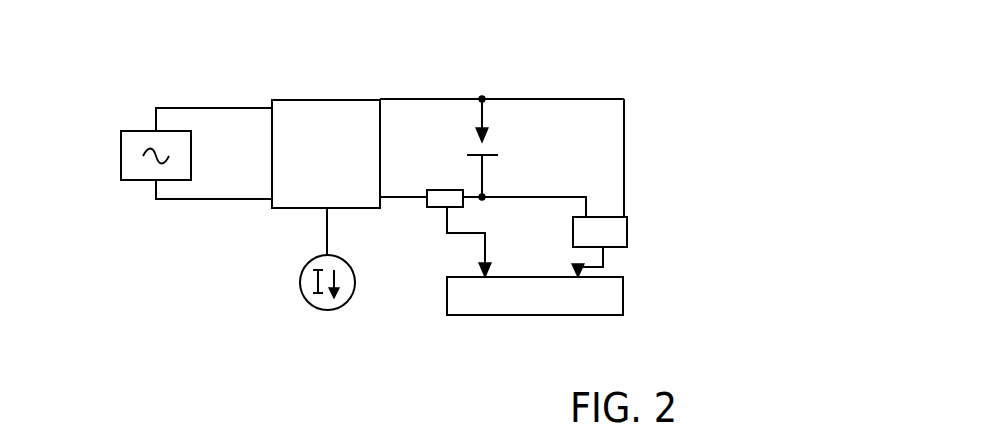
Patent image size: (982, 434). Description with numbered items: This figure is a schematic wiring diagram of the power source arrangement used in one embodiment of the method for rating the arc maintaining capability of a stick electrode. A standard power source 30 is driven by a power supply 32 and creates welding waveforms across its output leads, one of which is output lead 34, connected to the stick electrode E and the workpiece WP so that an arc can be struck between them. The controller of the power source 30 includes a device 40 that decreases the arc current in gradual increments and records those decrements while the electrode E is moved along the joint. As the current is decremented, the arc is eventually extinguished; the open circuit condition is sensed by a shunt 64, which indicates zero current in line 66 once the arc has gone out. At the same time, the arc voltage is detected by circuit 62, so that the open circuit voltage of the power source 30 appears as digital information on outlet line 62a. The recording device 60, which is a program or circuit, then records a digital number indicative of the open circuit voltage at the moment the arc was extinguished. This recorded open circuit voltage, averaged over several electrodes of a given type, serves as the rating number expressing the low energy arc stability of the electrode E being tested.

The power source 30 is at (308, 100).
The power supply 32 is at (128, 131).
The output lead 34 is at (432, 99).
The device 40 is at (300, 282).
The recording device 60 is at (447, 293).
The circuit 62 is at (627, 232).
The outlet line 62a is at (584, 268).
The shunt 64 is at (430, 190).
The line 66 is at (468, 233).
The stick electrode E is at (483, 115).
The workpiece WP is at (486, 157).